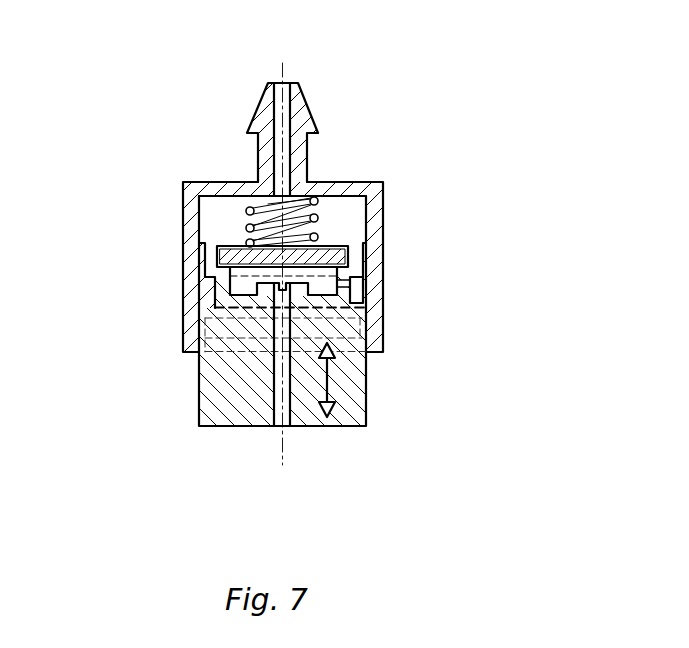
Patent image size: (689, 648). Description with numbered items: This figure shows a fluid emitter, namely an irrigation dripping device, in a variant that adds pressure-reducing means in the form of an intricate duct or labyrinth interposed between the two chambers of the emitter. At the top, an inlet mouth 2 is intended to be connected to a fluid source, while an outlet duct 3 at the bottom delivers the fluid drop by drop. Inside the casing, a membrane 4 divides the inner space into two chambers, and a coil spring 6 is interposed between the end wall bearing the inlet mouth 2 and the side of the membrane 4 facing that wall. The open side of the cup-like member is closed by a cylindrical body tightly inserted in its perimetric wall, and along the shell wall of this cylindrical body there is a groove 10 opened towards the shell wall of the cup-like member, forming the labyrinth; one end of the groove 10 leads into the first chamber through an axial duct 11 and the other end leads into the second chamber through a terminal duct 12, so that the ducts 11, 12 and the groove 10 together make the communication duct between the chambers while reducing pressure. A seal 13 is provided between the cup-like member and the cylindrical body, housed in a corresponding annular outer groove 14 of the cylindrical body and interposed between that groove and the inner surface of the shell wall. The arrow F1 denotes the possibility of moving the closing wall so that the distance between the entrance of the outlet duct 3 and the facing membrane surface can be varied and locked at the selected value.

The inlet mouth 2 is at (285, 82).
The outlet duct 3 is at (282, 427).
The membrane 4 is at (342, 244).
The coil spring 6 is at (340, 201).
The groove 10 is at (230, 288).
The axial duct 11 is at (198, 267).
The terminal duct 12 is at (356, 290).
The seal 13 is at (205, 318).
The annular outer groove 14 is at (207, 322).
The arrow F1 is at (347, 391).